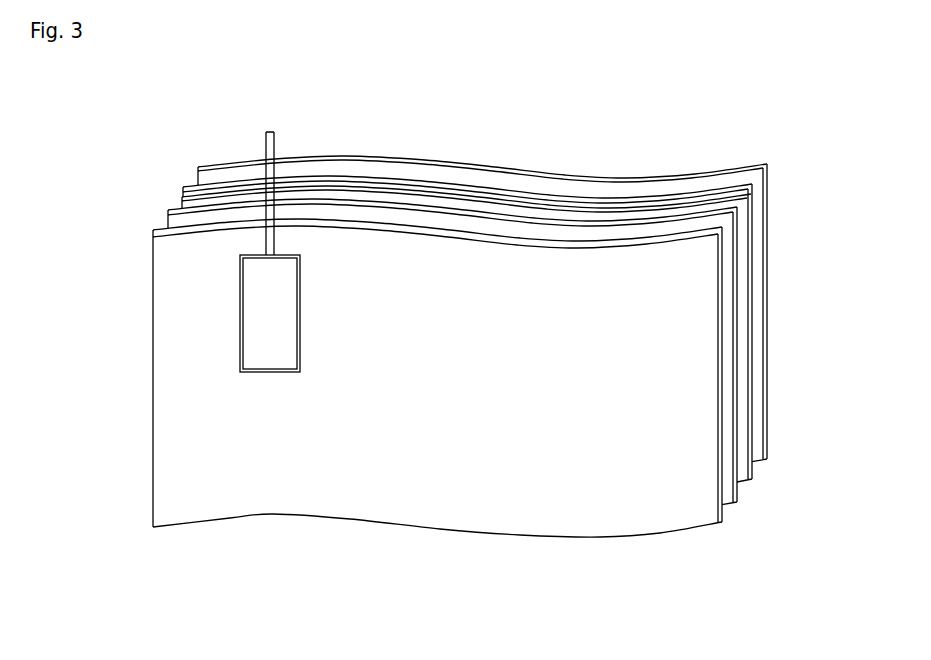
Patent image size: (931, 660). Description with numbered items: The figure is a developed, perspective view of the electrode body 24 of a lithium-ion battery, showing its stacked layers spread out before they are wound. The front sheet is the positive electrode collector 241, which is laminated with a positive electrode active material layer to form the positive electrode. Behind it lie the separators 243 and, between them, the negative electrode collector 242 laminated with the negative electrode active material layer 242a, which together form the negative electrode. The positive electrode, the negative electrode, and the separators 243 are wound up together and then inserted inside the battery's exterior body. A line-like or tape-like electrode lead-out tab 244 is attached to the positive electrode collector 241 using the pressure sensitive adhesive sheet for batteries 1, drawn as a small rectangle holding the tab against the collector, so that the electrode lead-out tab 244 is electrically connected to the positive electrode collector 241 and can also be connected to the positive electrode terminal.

The pressure sensitive adhesive sheet for batteries 1 is at (248, 328).
The electrode body 24 is at (510, 351).
The positive electrode collector 241 is at (608, 540).
The negative electrode collector 242 is at (577, 200).
The negative electrode active material layer 242a is at (660, 208).
The separators 243 is at (495, 217).
The electrode lead-out tab 244 is at (277, 137).